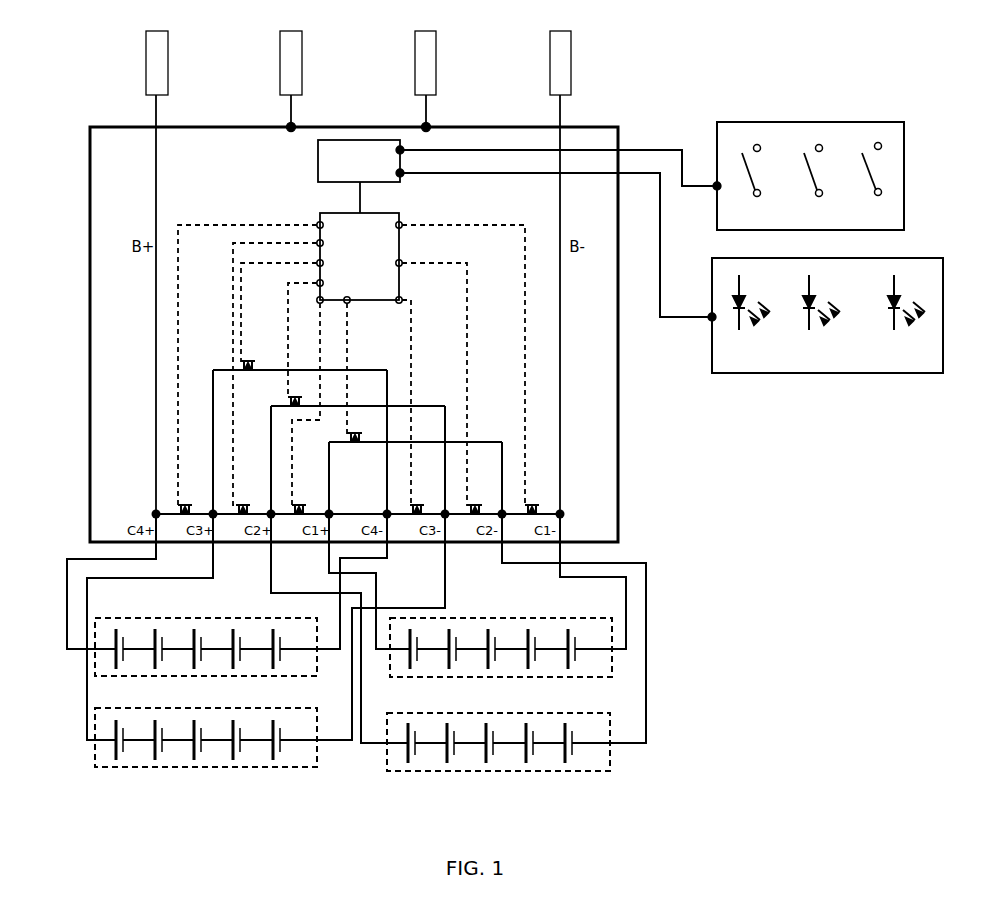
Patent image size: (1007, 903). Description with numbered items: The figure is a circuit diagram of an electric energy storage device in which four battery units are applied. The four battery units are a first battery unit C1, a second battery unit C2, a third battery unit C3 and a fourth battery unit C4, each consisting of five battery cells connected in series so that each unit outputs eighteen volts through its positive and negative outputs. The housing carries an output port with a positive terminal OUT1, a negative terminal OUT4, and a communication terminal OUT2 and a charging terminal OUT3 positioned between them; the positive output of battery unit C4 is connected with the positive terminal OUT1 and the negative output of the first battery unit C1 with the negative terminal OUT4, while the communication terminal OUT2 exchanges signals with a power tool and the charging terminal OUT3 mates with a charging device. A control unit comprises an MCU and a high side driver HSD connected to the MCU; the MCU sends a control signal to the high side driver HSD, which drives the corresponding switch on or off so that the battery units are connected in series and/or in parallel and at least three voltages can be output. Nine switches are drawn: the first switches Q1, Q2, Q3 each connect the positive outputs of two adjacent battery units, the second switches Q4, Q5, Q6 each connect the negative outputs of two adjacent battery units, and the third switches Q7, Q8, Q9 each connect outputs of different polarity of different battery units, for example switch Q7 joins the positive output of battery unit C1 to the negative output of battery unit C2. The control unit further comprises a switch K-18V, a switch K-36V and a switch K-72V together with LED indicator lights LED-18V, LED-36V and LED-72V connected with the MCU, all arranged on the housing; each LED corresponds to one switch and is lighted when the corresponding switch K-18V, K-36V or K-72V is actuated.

The positive terminal OUT1 is at (157, 261).
The communication terminal OUT2 is at (291, 70).
The charging terminal OUT3 is at (426, 70).
The negative terminal OUT4 is at (560, 261).
The element MCU is at (361, 176).
The high side driver HSD is at (359, 258).
The switch Q1 is at (184, 502).
The switch Q2 is at (242, 502).
The switch Q3 is at (297, 490).
The switch Q4 is at (419, 502).
The switch Q5 is at (477, 502).
The switch Q6 is at (534, 502).
The switch Q7 is at (358, 427).
The switch Q8 is at (300, 393).
The switch Q9 is at (248, 358).
The first battery unit C1 is at (606, 634).
The second battery unit C2 is at (606, 760).
The third battery unit C3 is at (100, 764).
The fourth battery unit C4 is at (98, 620).
The switch K-18V is at (747, 184).
The switch K-36V is at (810, 184).
The switch K-72V is at (875, 183).
The LED indicator light LED-18V is at (749, 320).
The LED indicator light LED-36V is at (825, 320).
The LED indicator light LED-72V is at (902, 320).